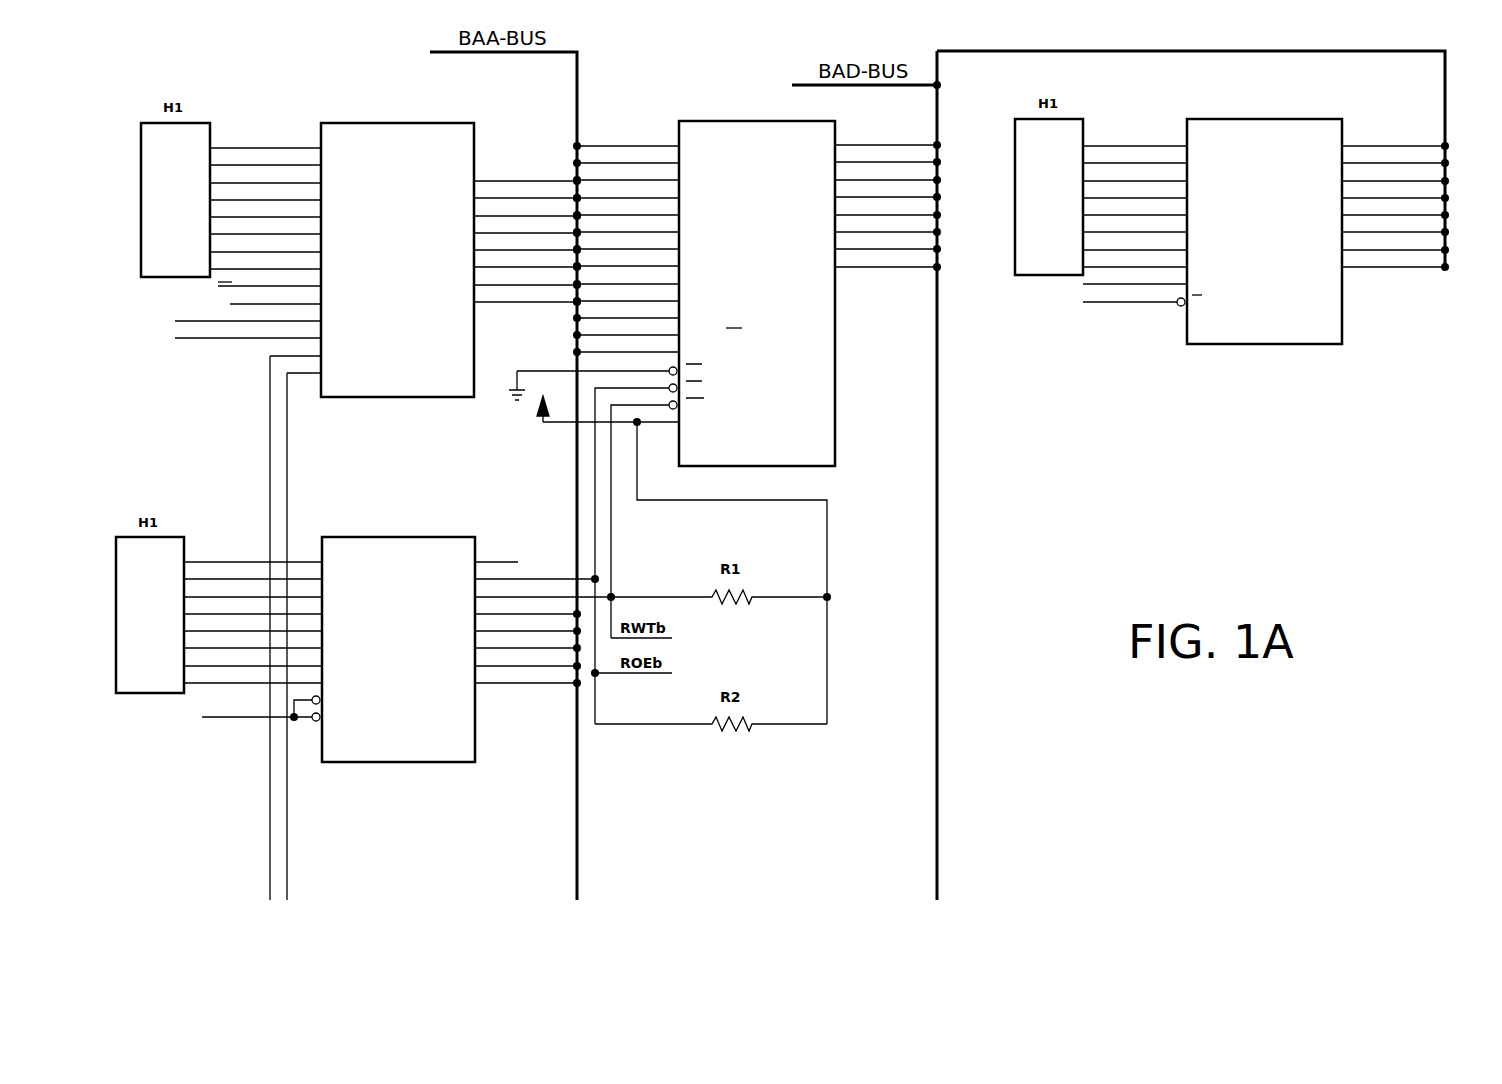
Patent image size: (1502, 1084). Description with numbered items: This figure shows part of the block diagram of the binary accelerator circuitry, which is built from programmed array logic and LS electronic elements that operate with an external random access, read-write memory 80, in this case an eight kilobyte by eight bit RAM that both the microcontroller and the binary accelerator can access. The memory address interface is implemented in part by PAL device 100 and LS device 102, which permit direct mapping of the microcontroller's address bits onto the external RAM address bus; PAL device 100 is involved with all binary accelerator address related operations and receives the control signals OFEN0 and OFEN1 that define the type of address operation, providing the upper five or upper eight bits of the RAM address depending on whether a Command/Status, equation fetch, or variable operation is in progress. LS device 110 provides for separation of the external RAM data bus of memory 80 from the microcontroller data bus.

The PAL device 100 is at (368, 123).
The LS device 102 is at (393, 537).
The random access, read-write memory 80 is at (835, 395).
The LS device 110 is at (1292, 344).